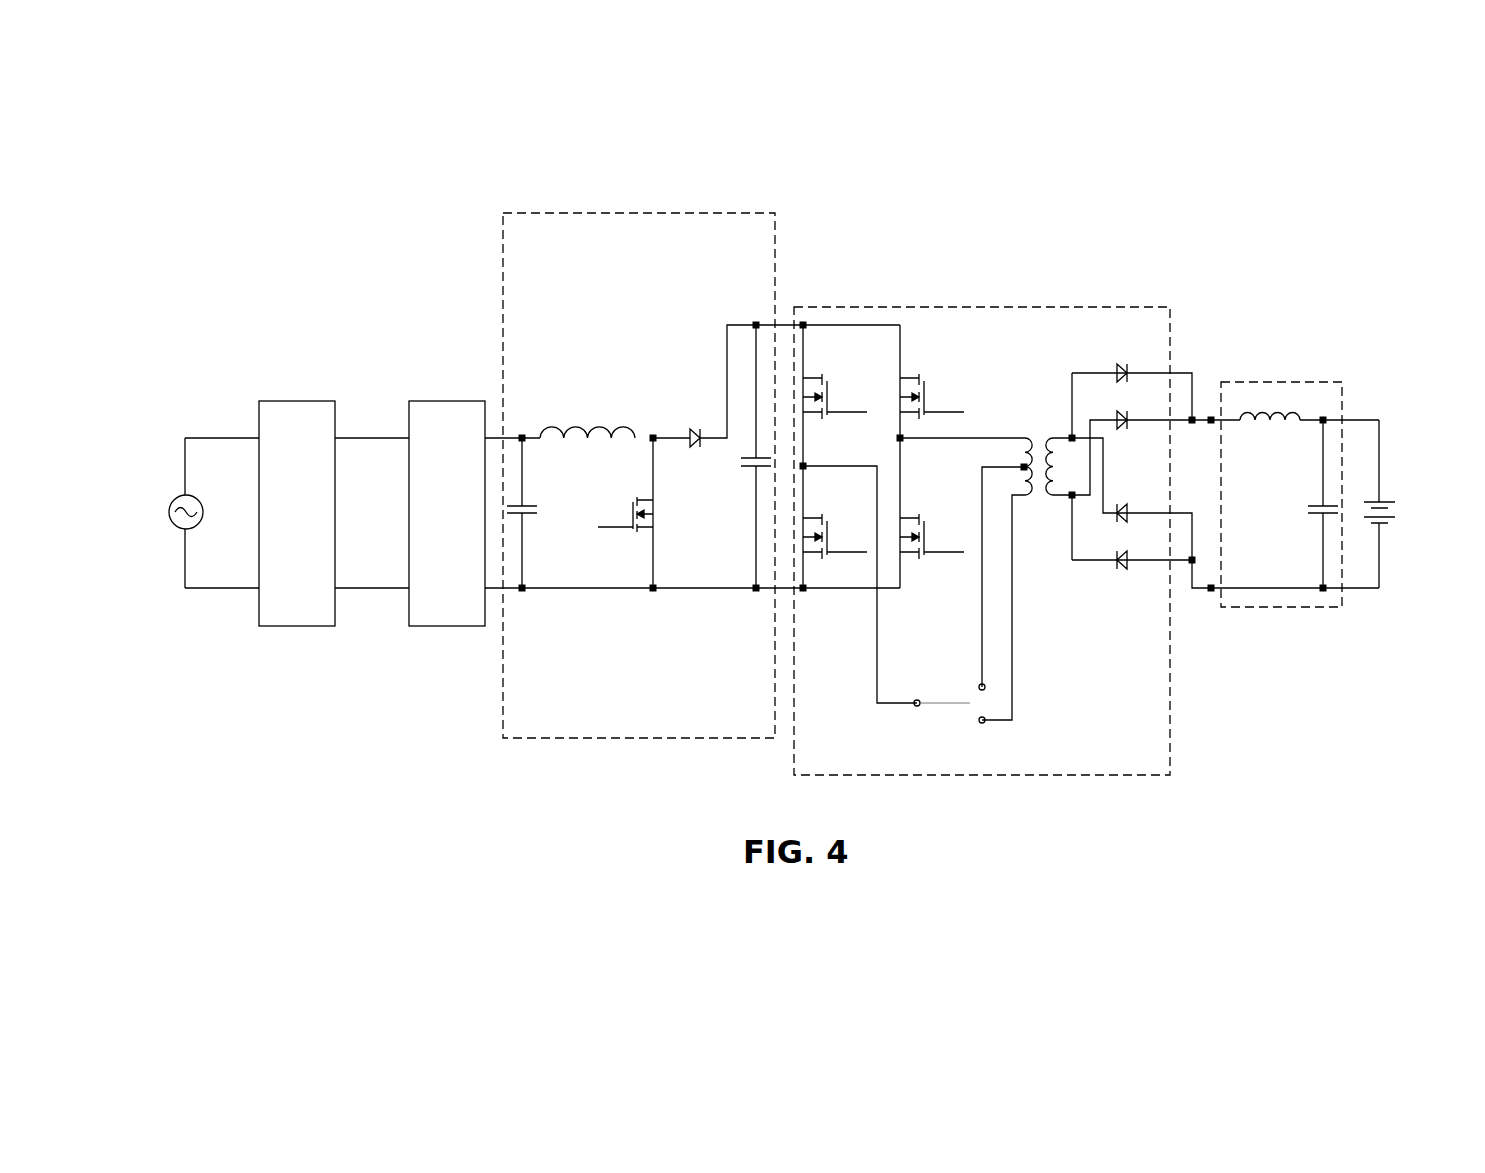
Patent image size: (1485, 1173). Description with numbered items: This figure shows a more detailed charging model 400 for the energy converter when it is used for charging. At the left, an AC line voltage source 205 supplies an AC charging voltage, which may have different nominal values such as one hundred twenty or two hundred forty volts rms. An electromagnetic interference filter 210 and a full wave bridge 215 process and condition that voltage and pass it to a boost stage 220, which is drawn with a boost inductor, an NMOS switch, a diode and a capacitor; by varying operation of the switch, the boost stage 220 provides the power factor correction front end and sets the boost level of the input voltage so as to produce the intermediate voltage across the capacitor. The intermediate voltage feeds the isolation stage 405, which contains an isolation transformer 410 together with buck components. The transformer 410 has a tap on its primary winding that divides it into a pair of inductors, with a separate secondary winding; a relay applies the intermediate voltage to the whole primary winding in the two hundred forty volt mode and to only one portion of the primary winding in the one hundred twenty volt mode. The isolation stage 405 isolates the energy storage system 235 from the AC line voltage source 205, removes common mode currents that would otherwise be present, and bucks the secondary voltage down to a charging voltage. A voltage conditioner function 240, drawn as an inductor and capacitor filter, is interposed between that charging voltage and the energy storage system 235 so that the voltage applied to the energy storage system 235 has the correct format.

The charging model 400 is at (408, 242).
The AC line voltage source 205 is at (182, 530).
The electromagnetic interference (EMI) filter 210 is at (316, 526).
The full wave bridge 215 is at (466, 526).
The boost stage 220 is at (655, 212).
The isolation stage 405 is at (933, 305).
The isolation transformer 410 is at (1047, 508).
The voltage conditioner function 240 is at (1287, 381).
The energy storage system 235 is at (1390, 533).